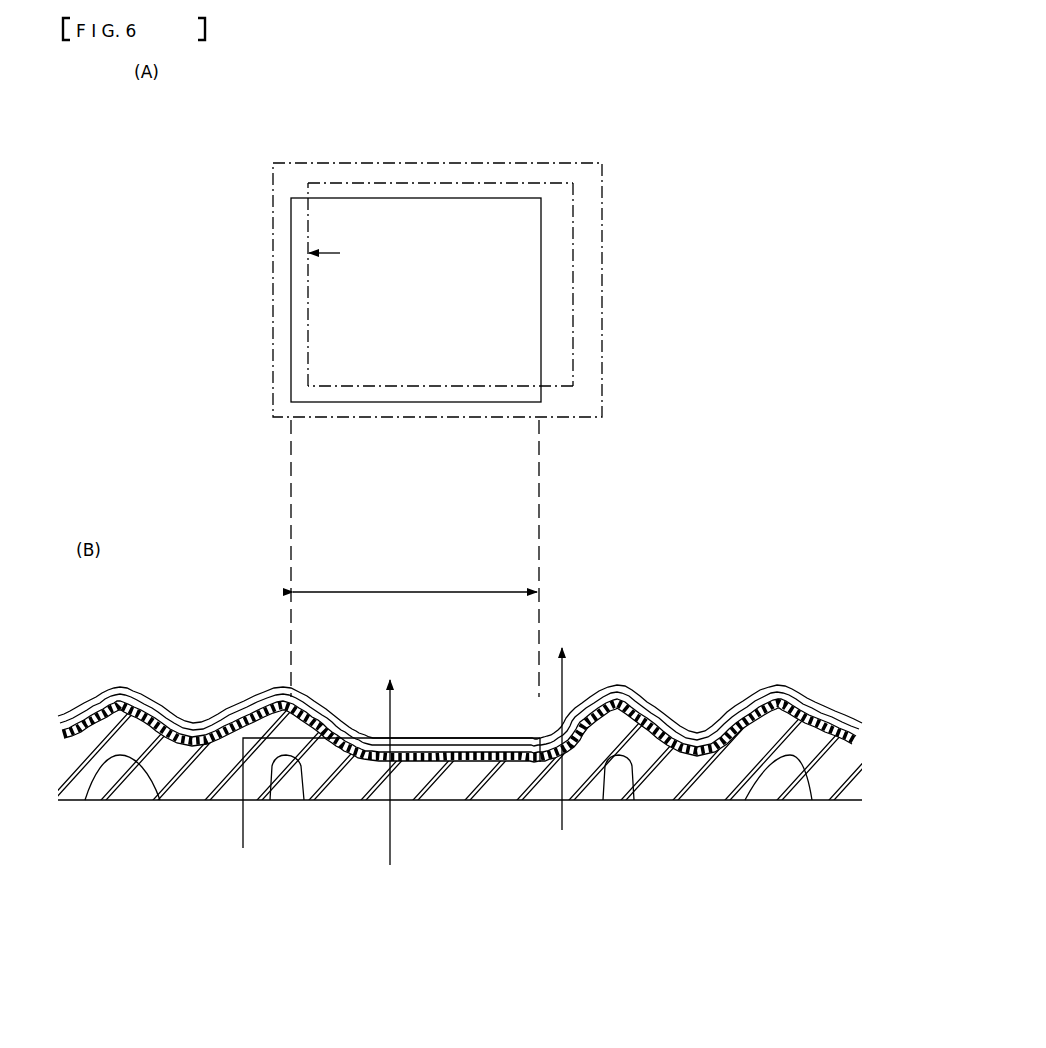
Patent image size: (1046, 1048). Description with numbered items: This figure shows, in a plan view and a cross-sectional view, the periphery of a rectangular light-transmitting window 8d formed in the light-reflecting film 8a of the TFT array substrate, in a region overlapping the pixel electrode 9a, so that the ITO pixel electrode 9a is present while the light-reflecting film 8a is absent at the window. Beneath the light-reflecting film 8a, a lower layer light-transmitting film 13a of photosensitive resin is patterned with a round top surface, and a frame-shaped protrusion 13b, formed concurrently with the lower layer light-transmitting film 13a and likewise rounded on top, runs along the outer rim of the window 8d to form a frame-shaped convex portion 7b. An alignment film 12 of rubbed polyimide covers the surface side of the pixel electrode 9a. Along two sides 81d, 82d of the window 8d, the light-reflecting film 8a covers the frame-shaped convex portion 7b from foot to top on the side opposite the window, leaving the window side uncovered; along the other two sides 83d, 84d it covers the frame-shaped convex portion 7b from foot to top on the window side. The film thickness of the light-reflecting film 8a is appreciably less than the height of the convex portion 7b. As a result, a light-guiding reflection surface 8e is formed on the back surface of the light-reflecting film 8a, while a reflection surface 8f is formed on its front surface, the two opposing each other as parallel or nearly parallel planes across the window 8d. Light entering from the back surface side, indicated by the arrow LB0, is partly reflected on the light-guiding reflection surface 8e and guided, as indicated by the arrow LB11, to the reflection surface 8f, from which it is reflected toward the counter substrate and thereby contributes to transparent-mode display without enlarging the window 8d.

The frame-shaped convex portion 7b is at (292, 712).
The frame-shaped protrusion 13b is at (272, 253).
The light-transmitting window 8d is at (541, 240).
The side of the light-transmitting window 84d is at (432, 197).
The side of the light-transmitting window 83d is at (557, 327).
The side of the light-transmitting window 82d is at (408, 393).
The side of the light-transmitting window 81d is at (303, 357).
The light-reflecting film 8a is at (666, 288).
The alignment film 12 is at (128, 688).
The pixel electrode 9a is at (155, 710).
The light-guiding reflection surface 8e is at (268, 700).
The reflection surface 8f is at (558, 740).
The lower layer light-transmitting film 13a is at (122, 793).
The laser beam LB0 is at (394, 783).
The arrow indicating guided light LB11 is at (574, 727).